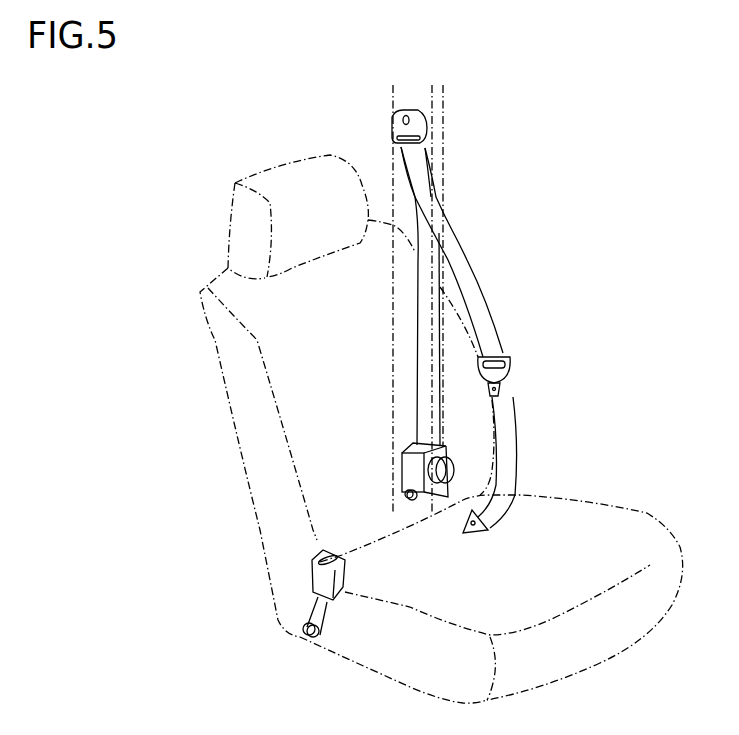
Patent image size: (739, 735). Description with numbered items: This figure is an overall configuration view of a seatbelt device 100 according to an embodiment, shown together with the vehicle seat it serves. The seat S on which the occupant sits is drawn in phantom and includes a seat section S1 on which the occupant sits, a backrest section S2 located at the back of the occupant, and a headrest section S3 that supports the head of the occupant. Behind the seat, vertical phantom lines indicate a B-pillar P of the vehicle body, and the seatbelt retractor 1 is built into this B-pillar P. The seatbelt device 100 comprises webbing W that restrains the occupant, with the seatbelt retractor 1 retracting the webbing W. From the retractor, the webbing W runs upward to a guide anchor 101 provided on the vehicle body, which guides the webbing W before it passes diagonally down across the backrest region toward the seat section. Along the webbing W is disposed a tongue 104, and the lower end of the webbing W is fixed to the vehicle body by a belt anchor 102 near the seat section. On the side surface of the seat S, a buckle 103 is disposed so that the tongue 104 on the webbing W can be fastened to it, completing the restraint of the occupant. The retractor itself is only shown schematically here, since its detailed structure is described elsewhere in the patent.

The seat S is at (177, 250).
The seat section S1 is at (612, 545).
The backrest section S2 is at (325, 328).
The headrest section S3 is at (325, 215).
The B-pillar P is at (438, 108).
The seatbelt device 100 is at (518, 303).
The webbing W is at (472, 255).
The guide anchor 101 is at (392, 125).
The tongue 104 is at (512, 378).
The belt anchor 102 is at (480, 530).
The seatbelt retractor 1 is at (413, 465).
The buckle 103 is at (317, 570).